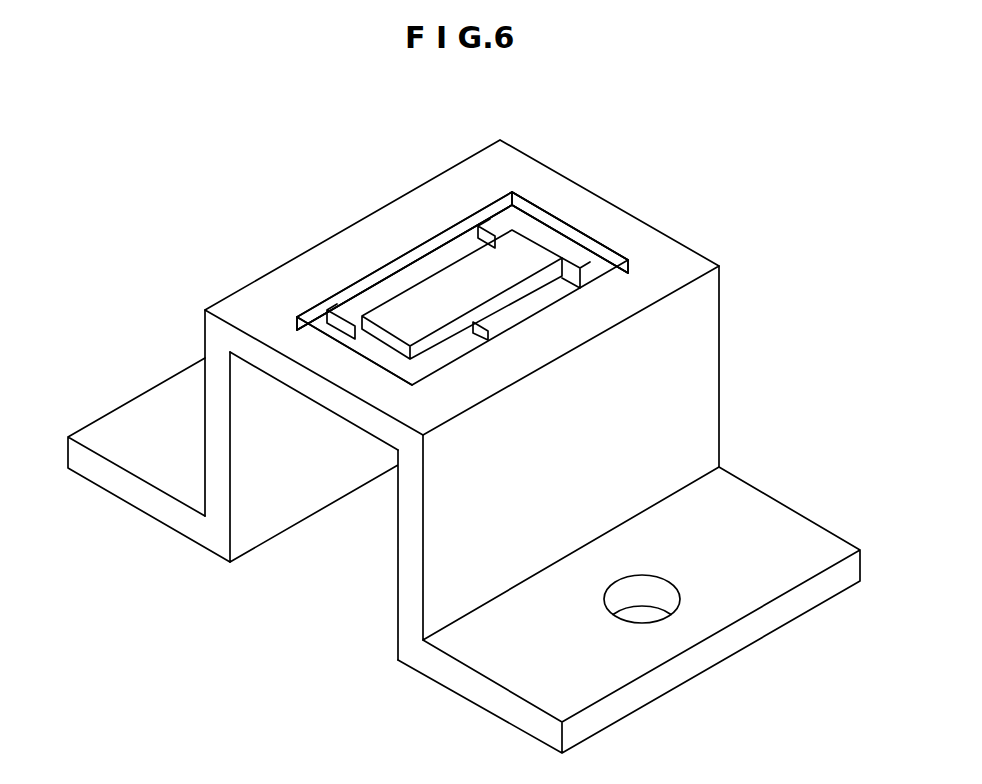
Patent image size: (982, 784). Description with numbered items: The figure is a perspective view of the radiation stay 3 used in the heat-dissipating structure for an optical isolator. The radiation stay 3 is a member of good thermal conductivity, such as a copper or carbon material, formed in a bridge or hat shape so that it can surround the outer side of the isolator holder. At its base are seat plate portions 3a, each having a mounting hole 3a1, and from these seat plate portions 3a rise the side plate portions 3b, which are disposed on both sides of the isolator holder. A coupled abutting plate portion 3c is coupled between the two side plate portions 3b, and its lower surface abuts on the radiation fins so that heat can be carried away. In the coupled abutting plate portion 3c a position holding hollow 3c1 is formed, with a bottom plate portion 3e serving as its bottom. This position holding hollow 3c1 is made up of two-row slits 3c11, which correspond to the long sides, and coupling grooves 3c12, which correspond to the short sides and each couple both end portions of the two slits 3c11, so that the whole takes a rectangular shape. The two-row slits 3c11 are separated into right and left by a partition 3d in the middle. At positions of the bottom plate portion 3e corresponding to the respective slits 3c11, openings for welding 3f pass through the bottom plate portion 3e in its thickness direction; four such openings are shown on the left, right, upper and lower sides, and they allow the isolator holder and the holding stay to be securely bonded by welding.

The radiation stay 3 is at (162, 142).
The seat plate portion 3a is at (143, 423).
The mounting hole 3a1 is at (653, 614).
The side plate portion 3b is at (218, 385).
The coupled abutting plate portion 3c is at (272, 328).
The position holding hollow 3c1 is at (713, 97).
The slit 3c11 is at (484, 210).
The coupling groove 3c12 is at (263, 278).
The partition 3d is at (430, 298).
The bottom plate portion 3e is at (352, 337).
The opening for welding 3f is at (367, 300).